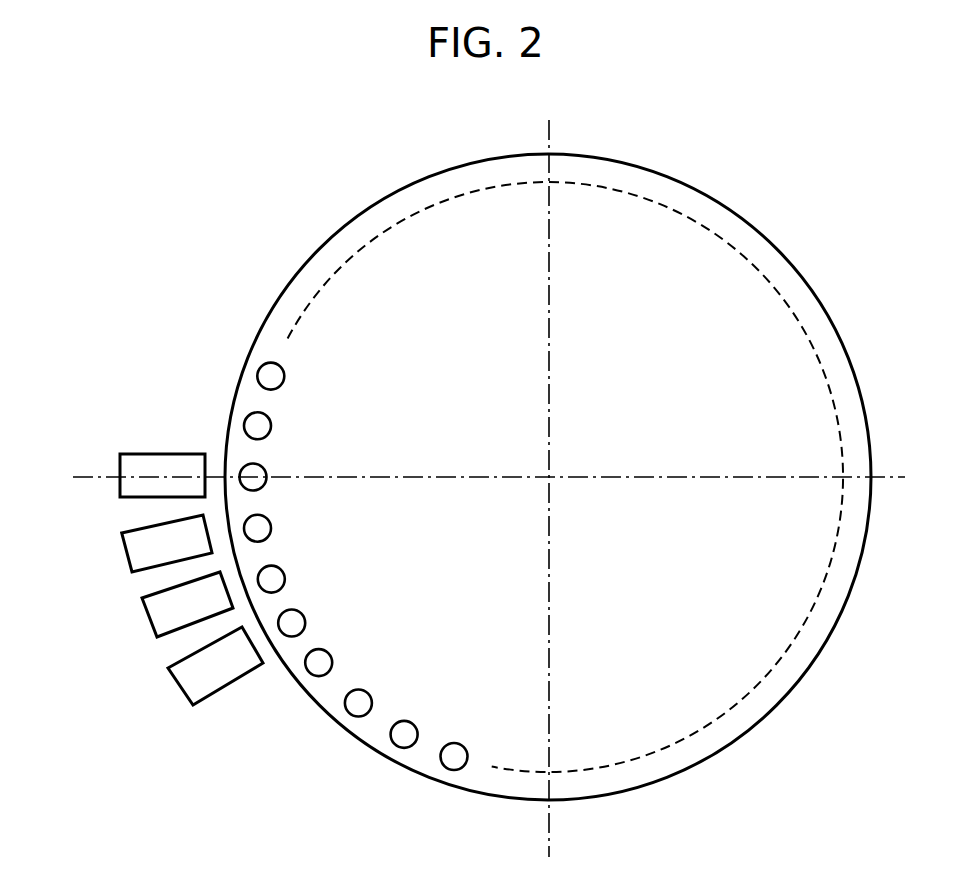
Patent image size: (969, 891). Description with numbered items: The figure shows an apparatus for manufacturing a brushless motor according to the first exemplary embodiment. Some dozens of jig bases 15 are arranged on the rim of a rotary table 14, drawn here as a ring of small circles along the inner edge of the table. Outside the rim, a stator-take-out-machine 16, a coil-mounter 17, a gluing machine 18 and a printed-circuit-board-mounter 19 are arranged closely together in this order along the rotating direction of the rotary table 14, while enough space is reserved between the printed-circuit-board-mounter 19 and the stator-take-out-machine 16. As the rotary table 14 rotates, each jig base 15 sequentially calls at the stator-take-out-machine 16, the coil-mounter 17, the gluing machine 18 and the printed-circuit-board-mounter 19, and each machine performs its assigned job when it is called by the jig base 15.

The rotary table 14 is at (300, 293).
The jig base 15 is at (265, 372).
The stator-take-out-machine 16 is at (158, 465).
The coil-mounter 17 is at (153, 547).
The gluing machine 18 is at (170, 610).
The printed-circuit-board-mounter 19 is at (197, 675).